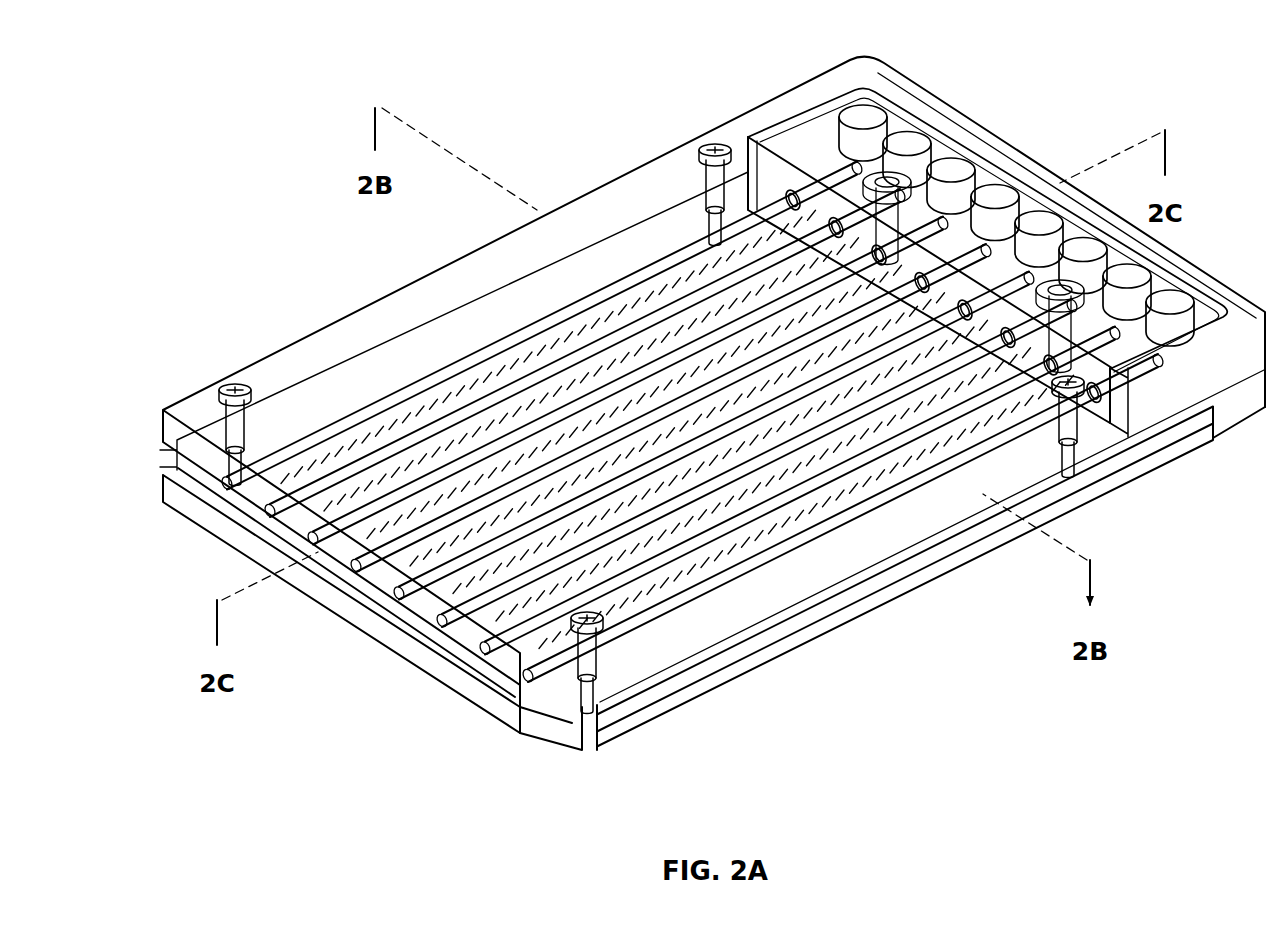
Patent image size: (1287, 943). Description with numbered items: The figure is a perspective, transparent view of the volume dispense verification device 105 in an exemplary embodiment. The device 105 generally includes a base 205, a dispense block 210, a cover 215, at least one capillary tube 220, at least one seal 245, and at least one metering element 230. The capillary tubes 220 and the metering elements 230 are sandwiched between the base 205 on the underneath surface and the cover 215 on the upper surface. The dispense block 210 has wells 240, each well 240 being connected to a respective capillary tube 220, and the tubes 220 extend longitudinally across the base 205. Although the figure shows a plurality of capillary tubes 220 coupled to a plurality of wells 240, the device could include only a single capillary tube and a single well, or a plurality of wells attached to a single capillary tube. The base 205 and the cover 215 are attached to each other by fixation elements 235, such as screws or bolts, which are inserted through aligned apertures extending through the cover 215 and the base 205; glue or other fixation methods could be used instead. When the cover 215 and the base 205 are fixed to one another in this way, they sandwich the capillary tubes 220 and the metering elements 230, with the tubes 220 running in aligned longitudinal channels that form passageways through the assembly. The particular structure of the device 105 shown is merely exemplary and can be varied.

The device 105 is at (158, 82).
The base 205 is at (1185, 457).
The dispense block 210 is at (1036, 207).
The cover 215 is at (912, 93).
The capillary tube 220 is at (508, 395).
The metering element 230 is at (650, 292).
The fixation element 235 is at (712, 145).
The well 240 is at (1165, 322).
The seal 245 is at (1097, 400).